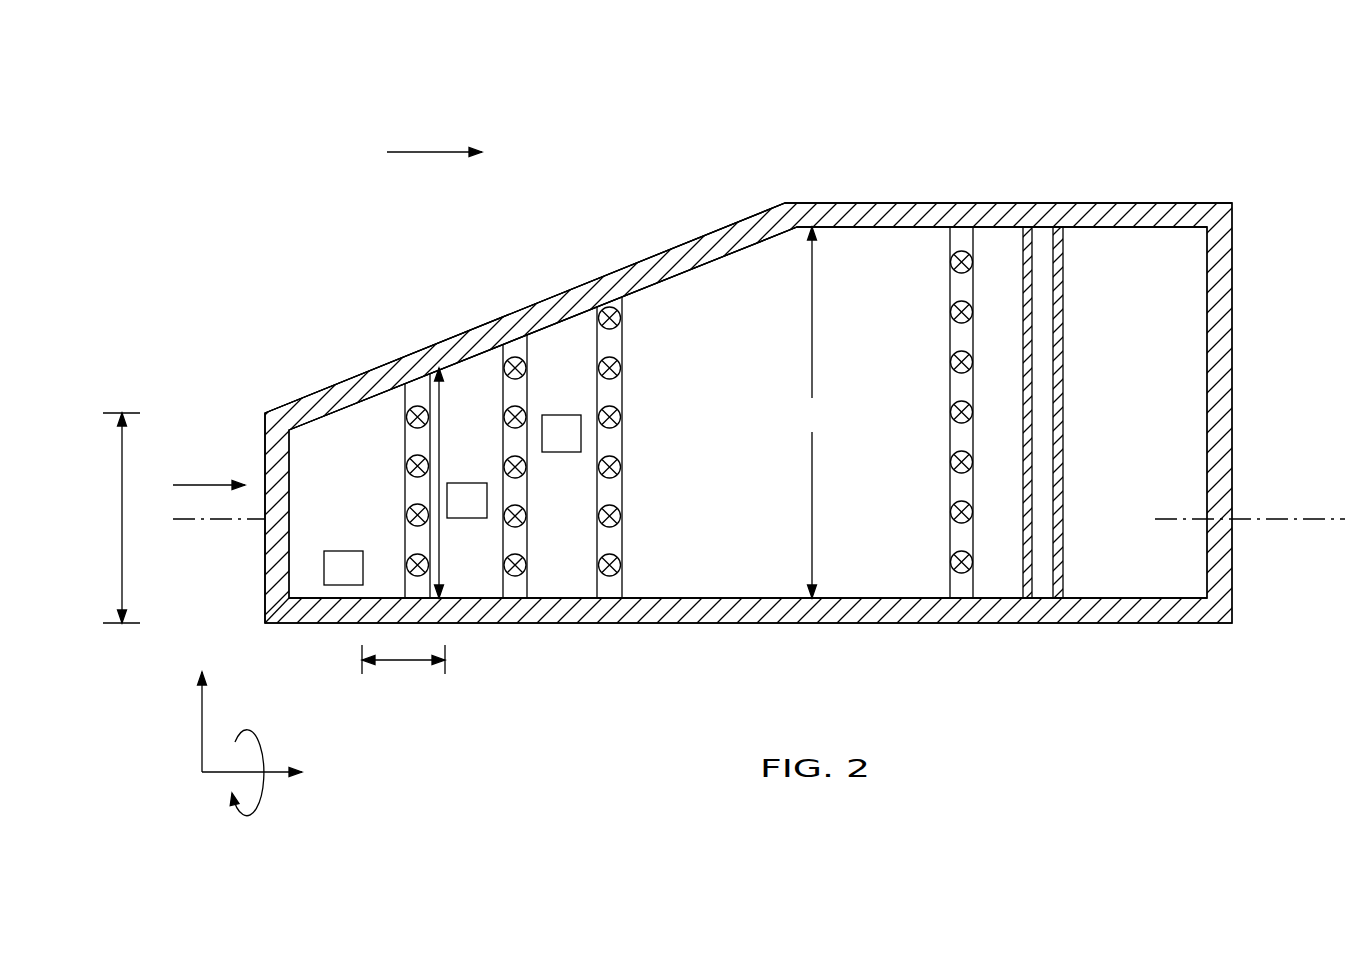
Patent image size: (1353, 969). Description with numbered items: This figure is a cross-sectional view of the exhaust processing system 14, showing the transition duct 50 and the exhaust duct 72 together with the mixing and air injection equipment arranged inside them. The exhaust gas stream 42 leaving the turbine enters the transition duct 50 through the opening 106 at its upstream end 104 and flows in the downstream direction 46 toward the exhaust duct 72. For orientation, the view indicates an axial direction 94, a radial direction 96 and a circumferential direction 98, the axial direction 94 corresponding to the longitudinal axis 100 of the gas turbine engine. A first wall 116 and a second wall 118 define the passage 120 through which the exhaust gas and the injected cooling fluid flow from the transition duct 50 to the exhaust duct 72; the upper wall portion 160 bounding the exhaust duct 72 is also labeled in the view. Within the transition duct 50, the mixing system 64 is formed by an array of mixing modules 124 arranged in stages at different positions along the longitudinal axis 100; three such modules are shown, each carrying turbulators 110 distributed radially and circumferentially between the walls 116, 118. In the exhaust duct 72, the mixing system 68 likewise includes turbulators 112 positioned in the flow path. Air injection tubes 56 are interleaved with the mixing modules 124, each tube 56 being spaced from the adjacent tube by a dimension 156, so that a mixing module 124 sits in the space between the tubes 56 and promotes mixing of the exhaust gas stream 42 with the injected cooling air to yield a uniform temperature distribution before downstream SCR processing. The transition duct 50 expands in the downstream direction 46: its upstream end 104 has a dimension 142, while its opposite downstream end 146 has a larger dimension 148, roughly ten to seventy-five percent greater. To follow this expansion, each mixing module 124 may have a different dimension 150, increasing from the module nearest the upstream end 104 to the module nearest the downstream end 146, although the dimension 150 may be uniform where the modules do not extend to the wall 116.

The exhaust processing system 14 is at (280, 281).
The exhaust gas stream 42 is at (205, 485).
The downstream direction 46 is at (427, 152).
The transition duct 50 is at (364, 374).
The air injection tubes 56 is at (345, 551).
The mixing system 64 is at (377, 472).
The mixing system 68 is at (866, 585).
The exhaust duct 72 is at (1040, 583).
The axial direction 94 is at (275, 775).
The radial direction 96 is at (202, 728).
The circumferential direction 98 is at (262, 745).
The longitudinal axis 100 is at (1271, 519).
The upstream end 104 is at (237, 420).
The opening 106 is at (265, 565).
The turbulators 110 is at (405, 420).
The turbulators 112 is at (952, 358).
The first wall 116 is at (714, 260).
The second wall 118 is at (668, 598).
The passage 120 is at (703, 476).
The mixing modules 124 is at (420, 392).
The dimension 142 is at (122, 518).
The downstream end 146 is at (822, 172).
The dimension 148 is at (812, 412).
The dimension 150 is at (440, 403).
The dimension 156 is at (405, 666).
The top wall 160 is at (1056, 202).